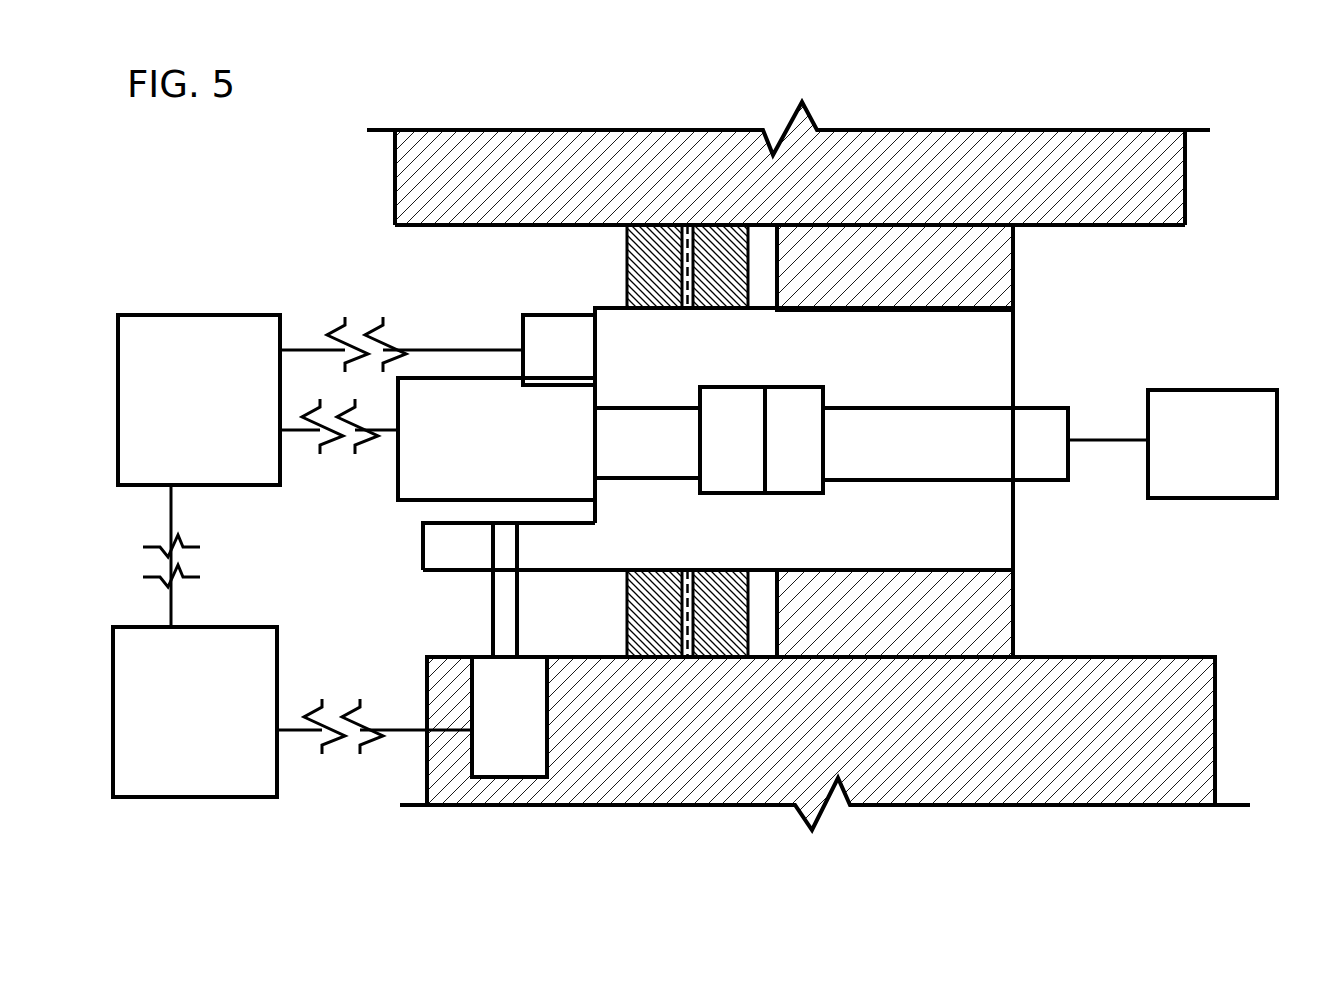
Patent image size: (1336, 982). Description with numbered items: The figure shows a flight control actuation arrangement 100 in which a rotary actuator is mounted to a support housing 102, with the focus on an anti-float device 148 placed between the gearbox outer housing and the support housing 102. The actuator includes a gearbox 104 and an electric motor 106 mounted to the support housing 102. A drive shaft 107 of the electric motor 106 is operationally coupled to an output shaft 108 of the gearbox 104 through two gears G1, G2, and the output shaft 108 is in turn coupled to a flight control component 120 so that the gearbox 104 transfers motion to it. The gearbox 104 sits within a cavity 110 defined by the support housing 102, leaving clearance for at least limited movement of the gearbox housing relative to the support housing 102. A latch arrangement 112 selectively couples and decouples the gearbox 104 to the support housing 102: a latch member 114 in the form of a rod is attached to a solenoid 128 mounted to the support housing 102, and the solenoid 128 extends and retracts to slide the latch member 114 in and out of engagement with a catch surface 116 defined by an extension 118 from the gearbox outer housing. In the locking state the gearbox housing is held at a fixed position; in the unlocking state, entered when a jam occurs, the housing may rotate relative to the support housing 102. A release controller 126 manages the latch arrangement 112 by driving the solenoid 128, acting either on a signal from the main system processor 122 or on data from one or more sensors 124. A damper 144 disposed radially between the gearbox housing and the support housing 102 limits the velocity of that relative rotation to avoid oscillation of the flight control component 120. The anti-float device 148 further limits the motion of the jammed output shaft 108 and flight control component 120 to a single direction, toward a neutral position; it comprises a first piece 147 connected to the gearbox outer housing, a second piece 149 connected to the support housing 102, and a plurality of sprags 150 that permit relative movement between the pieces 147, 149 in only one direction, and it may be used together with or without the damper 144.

The flight control actuation arrangement 100 is at (1170, 565).
The support housing 102 is at (418, 165).
The gearbox 104 is at (957, 530).
The electric motor 106 is at (496, 439).
The drive shaft 107 is at (647, 443).
The output shaft 108 is at (945, 444).
The cavity 110 is at (1087, 227).
The latch arrangement 112 is at (382, 582).
The latch member 114 is at (492, 637).
The catch surface 116 is at (520, 573).
The extension 118 is at (452, 543).
The flight control component 120 is at (1172, 444).
The main system processor 122 is at (320, 471).
The sensors 124 is at (559, 350).
The release controller 126 is at (292, 712).
The solenoid 128 is at (509, 717).
The damper 144 is at (977, 268).
The first piece 147 is at (665, 250).
The anti-float device 148 is at (610, 258).
The second piece 149 is at (730, 248).
The sprags 150 is at (688, 240).
The gear G1 is at (732, 440).
The gear G2 is at (794, 440).